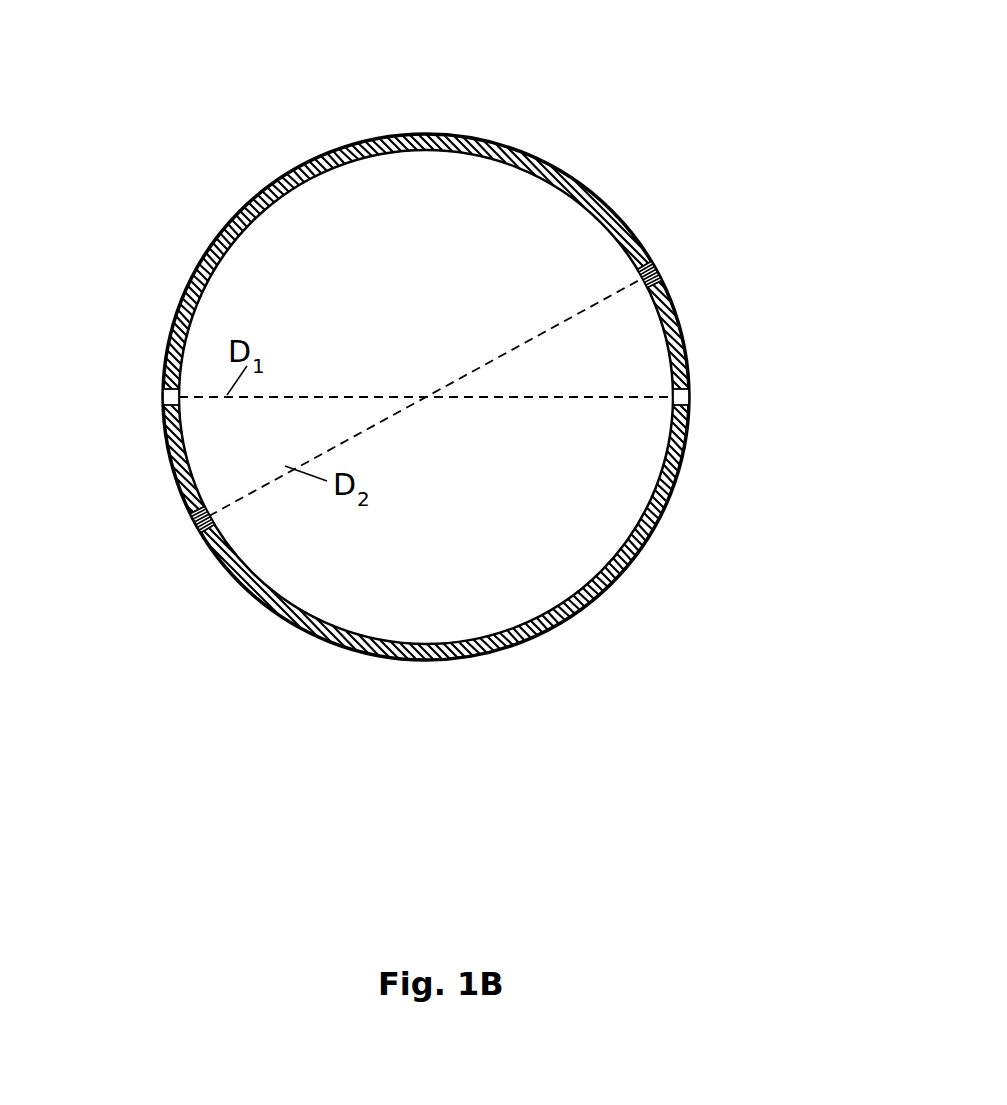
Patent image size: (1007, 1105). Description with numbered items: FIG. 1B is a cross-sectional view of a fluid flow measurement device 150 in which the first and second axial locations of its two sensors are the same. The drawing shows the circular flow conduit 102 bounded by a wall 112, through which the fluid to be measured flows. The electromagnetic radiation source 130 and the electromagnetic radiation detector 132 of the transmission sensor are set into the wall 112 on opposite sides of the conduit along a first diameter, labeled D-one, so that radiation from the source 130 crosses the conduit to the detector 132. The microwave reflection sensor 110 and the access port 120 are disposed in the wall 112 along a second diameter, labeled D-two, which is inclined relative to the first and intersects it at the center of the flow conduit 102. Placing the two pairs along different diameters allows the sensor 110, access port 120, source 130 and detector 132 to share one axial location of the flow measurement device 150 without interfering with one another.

The fluid flow measurement device 150 is at (650, 100).
The wall 112 is at (646, 531).
The microwave reflection sensor 110 is at (660, 250).
The access port 120 is at (178, 518).
The electromagnetic radiation source 130 is at (165, 393).
The electromagnetic radiation detector 132 is at (688, 398).
The flow conduit 102 is at (457, 314).